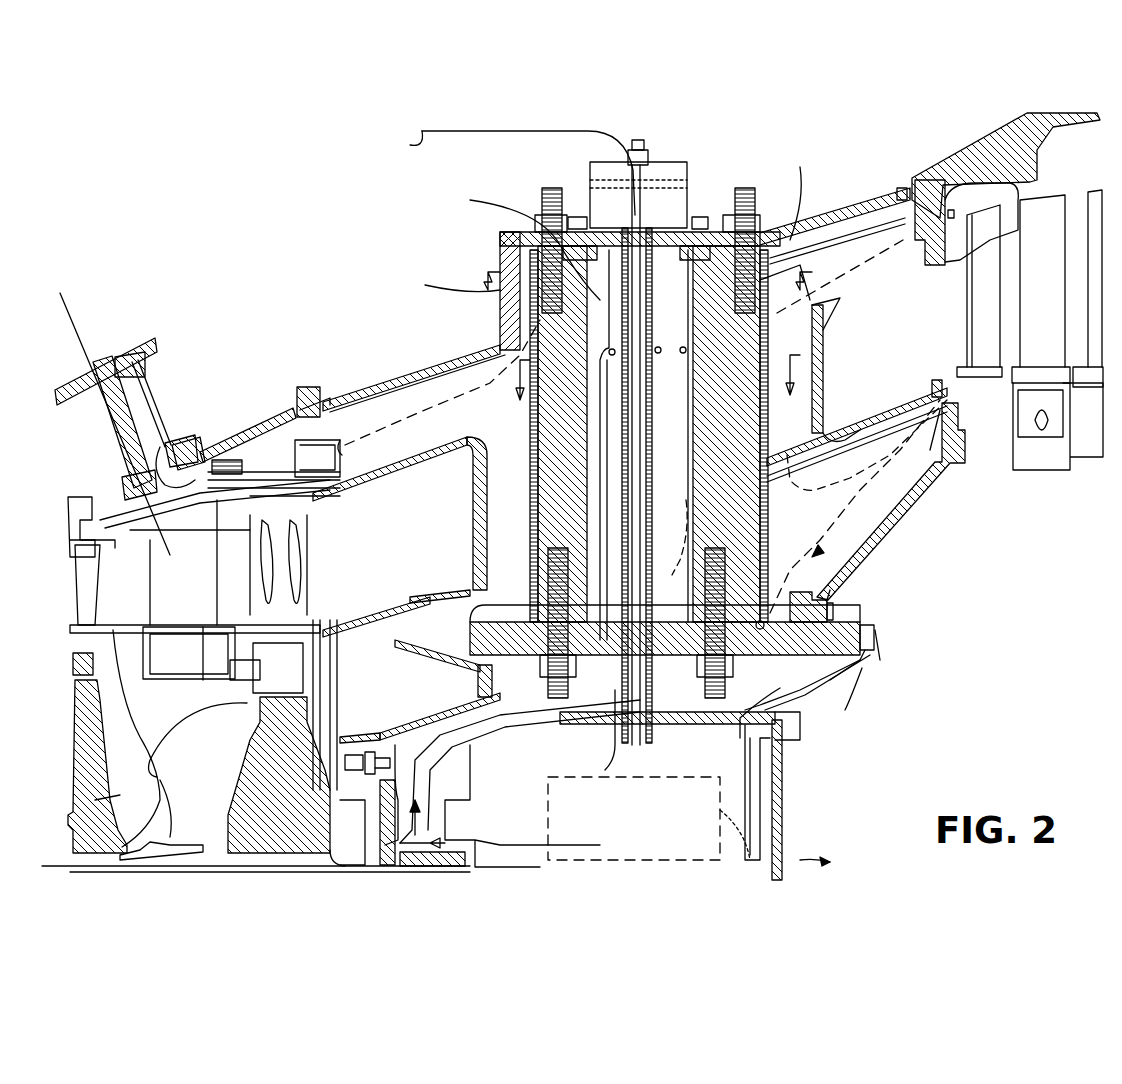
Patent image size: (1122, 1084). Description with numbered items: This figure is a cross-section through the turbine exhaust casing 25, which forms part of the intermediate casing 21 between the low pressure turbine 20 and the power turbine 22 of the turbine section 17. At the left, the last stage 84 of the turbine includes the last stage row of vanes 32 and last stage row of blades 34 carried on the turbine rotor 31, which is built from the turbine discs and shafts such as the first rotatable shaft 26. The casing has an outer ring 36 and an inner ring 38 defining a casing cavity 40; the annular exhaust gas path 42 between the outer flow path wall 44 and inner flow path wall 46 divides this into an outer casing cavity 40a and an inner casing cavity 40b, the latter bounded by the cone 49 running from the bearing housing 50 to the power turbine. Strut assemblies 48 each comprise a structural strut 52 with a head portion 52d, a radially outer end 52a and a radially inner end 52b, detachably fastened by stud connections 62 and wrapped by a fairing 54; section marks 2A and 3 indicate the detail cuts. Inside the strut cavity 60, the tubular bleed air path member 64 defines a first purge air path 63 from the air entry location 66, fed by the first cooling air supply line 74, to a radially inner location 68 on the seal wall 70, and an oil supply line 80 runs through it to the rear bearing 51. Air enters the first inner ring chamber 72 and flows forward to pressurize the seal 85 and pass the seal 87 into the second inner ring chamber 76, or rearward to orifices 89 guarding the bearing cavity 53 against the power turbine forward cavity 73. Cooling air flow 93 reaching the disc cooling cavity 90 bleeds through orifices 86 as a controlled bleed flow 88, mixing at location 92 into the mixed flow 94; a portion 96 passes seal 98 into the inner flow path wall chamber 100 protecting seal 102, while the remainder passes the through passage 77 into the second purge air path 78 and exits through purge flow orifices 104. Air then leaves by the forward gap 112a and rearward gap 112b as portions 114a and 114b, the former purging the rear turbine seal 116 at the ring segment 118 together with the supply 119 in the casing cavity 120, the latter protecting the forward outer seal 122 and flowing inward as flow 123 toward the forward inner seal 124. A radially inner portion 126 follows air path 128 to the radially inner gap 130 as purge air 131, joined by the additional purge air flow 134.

The turbine section 17 is at (40, 335).
The low pressure turbine 20 is at (95, 485).
The intermediate casing 21 is at (280, 310).
The power turbine 22 is at (950, 135).
The turbine exhaust casing 25 is at (308, 385).
The first rotatable shaft 26 is at (75, 862).
The turbine rotor 31 is at (355, 868).
The last stage row of vanes 32 is at (105, 583).
The last stage row of blades 34 is at (240, 590).
The outer ring 36 is at (498, 238).
The inner ring 38 is at (840, 680).
The turbine exhaust casing cavity 40 is at (400, 395).
The outer casing cavity 40a is at (335, 380).
The inner casing cavity 40b is at (833, 552).
The exhaust gas path 42 is at (408, 542).
The outer flow path wall 44 is at (455, 395).
The inner flow path wall 46 is at (420, 600).
The strut assembly 48 is at (850, 235).
The cone 49 is at (860, 550).
The bearing housing 50 is at (760, 830).
The rear bearing 51 is at (735, 862).
The structural strut 52 is at (835, 385).
The radially outer end of strut 52a is at (778, 260).
The radially inner end of strut 52b is at (833, 612).
The enlarged head portion 52d is at (720, 228).
The bearing cavity 53 is at (495, 865).
The fairing 54 is at (830, 360).
The strut cavity 60 is at (560, 520).
The threaded bolt or stud connections 62 is at (535, 222).
The first purge air path 63 is at (630, 385).
The tubular bleed air path member 64 is at (651, 430).
The air entry location 66 is at (630, 190).
The radially inner location 68 is at (650, 710).
The seal wall 70 is at (860, 672).
The first inner ring chamber 72 is at (790, 735).
The power turbine forward cavity 73 is at (935, 625).
The first cooling air supply line 74 is at (410, 145).
The second inner ring chamber 76 is at (790, 718).
The through passage 77 is at (560, 625).
The second purge air path 78 is at (800, 690).
The oil supply line 80 is at (640, 230).
The last stage of the low pressure turbine 84 is at (255, 430).
The seal 85 is at (465, 853).
The orifices 86 is at (380, 860).
The seal 87 is at (408, 850).
The controlled bleed flow 88 is at (340, 866).
The orifices 89 is at (770, 760).
The disc cooling cavity 90 is at (73, 811).
The mixing location 92 is at (410, 715).
The cooling air flow 93 is at (150, 810).
The mixed flow 94 is at (398, 745).
The portion of mixed flow 96 is at (300, 760).
The seal 98 is at (370, 775).
The inner flow path wall chamber 100 is at (387, 669).
The seal 102 is at (330, 630).
The low loss purge flow orifices 104 is at (526, 241).
The radially outer forward gap 112a is at (446, 280).
The radially outer rearward gap 112b is at (794, 194).
The forward flowing portion of purge air 114a is at (310, 400).
The rearward flowing portion of purge air 114b is at (830, 240).
The rear turbine seal 116 is at (330, 480).
The last stage turbine ring segment 118 is at (253, 460).
The cooling/purge air supply 119 is at (172, 440).
The last stage turbine casing cavity 120 is at (240, 440).
The forward outer seal 122 is at (945, 190).
The flow 123 is at (770, 430).
The forward inner seal 124 is at (965, 400).
The radially inner portion of mixed air 126 is at (688, 560).
The air path 128 is at (560, 470).
The radially inner gap 130 is at (875, 640).
The additional purge air 131 is at (827, 507).
The additional purge air flow 134 is at (830, 588).
The section 2A is at (676, 276).
The section 3 is at (659, 385).